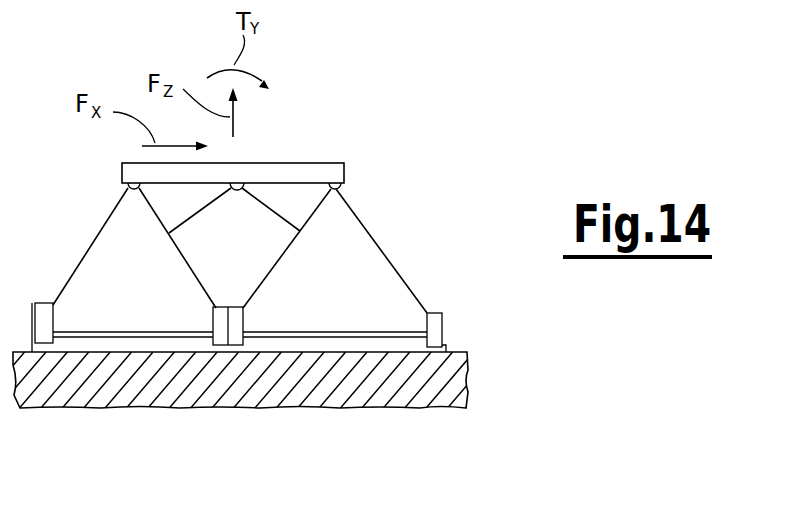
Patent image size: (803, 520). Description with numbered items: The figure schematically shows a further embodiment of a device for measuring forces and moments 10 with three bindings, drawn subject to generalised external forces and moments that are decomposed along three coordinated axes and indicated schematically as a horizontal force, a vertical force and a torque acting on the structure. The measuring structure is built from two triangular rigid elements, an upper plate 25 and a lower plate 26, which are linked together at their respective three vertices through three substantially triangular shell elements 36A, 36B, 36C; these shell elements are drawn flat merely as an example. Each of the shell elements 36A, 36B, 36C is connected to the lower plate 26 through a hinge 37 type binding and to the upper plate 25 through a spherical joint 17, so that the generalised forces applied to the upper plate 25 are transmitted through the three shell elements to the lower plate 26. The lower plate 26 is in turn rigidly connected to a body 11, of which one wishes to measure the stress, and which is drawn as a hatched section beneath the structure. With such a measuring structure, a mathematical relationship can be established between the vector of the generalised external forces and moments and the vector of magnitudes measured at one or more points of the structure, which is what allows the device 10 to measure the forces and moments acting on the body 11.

The device for measuring forces and moments 10 is at (440, 138).
The body 11 is at (206, 388).
The spherical joint 17 is at (125, 187).
The upper plate 25 is at (308, 175).
The lower plate 26 is at (412, 345).
The shell element 36A is at (378, 306).
The shell element 36B is at (170, 300).
The shell element 36C is at (263, 253).
The hinge 37 is at (42, 305).